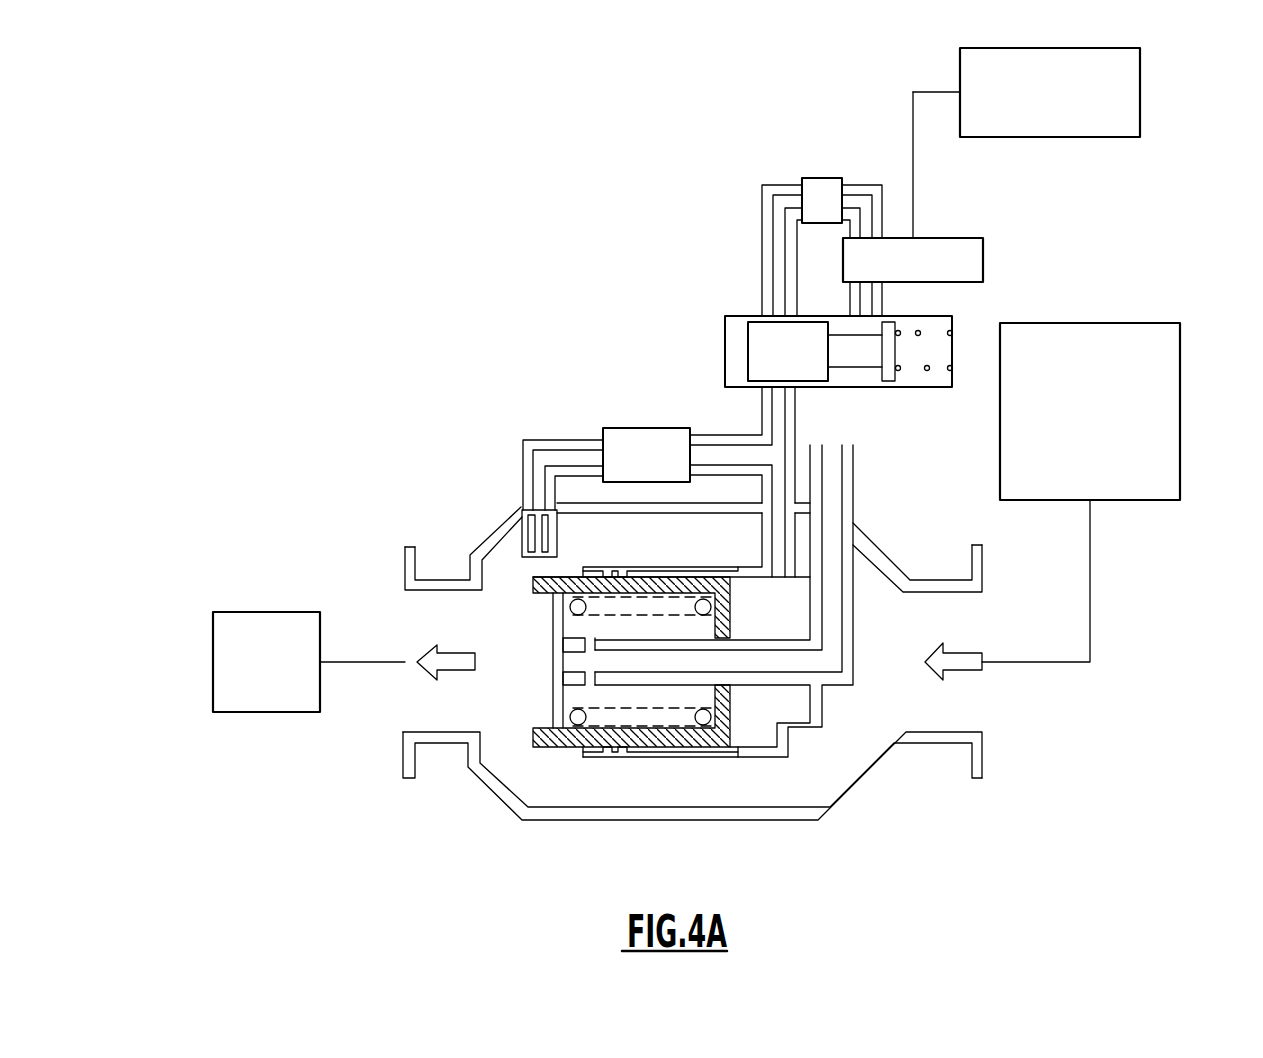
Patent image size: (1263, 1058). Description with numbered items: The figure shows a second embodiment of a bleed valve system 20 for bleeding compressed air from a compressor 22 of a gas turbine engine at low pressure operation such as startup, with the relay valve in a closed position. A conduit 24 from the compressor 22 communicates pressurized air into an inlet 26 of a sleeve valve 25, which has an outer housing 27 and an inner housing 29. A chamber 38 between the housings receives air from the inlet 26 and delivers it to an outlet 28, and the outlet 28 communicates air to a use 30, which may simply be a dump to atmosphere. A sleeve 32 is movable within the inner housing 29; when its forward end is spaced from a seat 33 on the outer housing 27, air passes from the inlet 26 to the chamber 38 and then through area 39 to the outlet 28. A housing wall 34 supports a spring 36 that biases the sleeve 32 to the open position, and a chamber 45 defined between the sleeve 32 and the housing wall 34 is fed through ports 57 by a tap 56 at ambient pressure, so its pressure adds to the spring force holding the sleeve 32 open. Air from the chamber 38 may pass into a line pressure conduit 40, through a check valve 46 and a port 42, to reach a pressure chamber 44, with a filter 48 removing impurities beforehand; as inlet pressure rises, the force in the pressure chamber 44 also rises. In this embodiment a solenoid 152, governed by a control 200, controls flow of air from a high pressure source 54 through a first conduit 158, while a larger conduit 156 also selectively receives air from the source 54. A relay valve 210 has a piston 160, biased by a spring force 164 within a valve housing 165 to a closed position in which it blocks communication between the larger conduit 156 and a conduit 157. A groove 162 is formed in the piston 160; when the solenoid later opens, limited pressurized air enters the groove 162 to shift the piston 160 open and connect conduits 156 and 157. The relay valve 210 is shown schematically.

The bleed valve system 20 is at (558, 231).
The compressor 22 is at (1125, 323).
The conduit 24 is at (1090, 566).
The sleeve valve 25 is at (890, 821).
The inlet 26 is at (928, 625).
The outer housing 27 is at (817, 815).
The outlet 28 is at (438, 623).
The inner housing 29 is at (790, 748).
The use 30 is at (258, 633).
The sleeve 32 is at (570, 745).
The seat 33 is at (480, 752).
The housing wall 34 is at (550, 632).
The spring 36 is at (650, 608).
The chamber 38 is at (715, 790).
The area 39 is at (502, 582).
The line pressure conduit 40 is at (555, 455).
The port 42 is at (772, 457).
The pressure chamber 44 is at (792, 621).
The chamber 45 is at (643, 697).
The check valve 46 is at (637, 428).
The filter 48 is at (527, 540).
The high pressure source 54 is at (827, 178).
The tap 56 is at (833, 490).
The ports 57 is at (590, 680).
The solenoid 152 is at (983, 258).
The larger conduit 156 is at (775, 255).
The conduit 157 is at (772, 428).
The first conduit 158 is at (867, 220).
The piston 160 is at (810, 364).
The groove 162 is at (858, 380).
The spring force 164 is at (929, 370).
The valve housing 165 is at (955, 343).
The control 200 is at (1140, 97).
The relay valve 210 is at (696, 346).